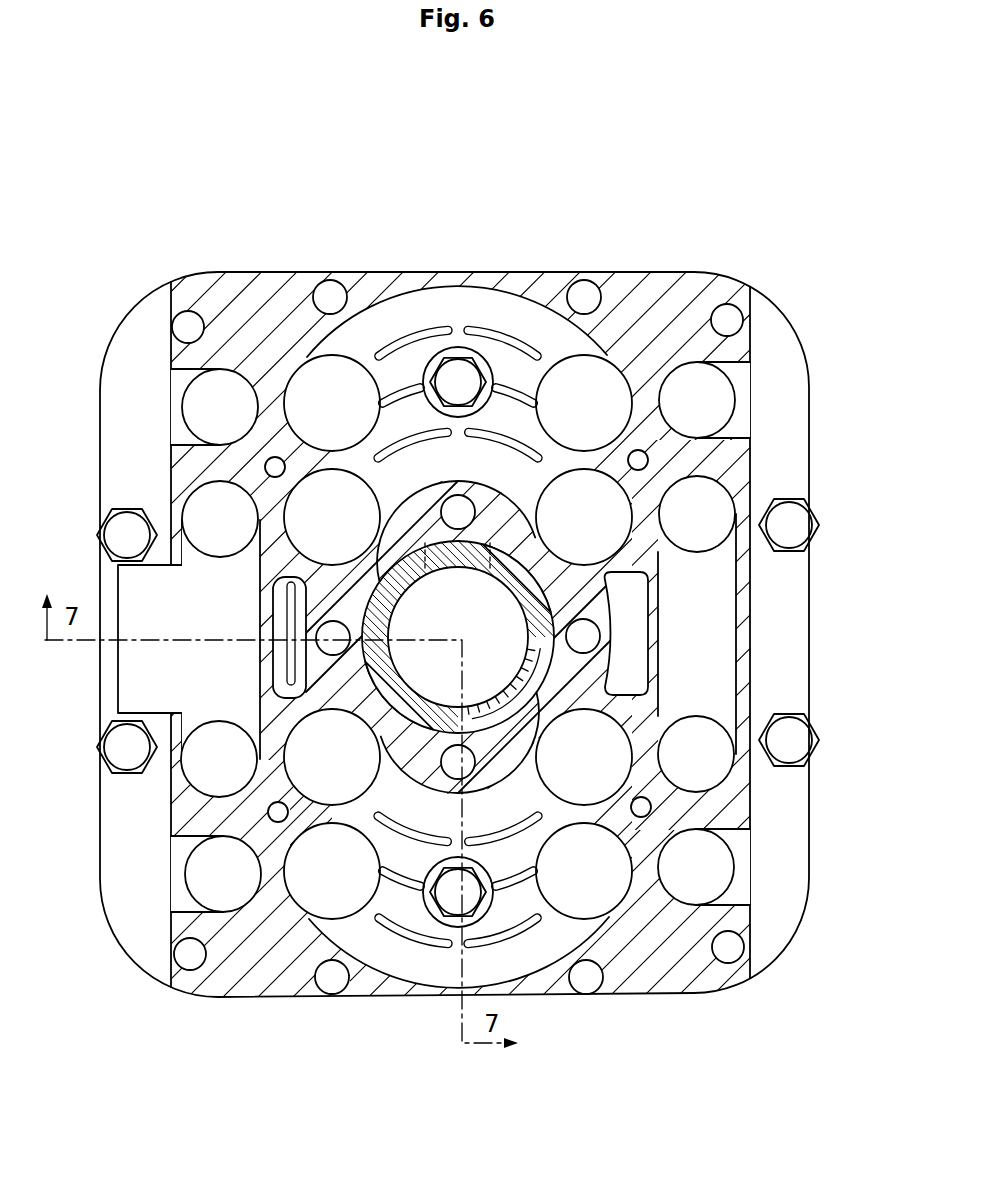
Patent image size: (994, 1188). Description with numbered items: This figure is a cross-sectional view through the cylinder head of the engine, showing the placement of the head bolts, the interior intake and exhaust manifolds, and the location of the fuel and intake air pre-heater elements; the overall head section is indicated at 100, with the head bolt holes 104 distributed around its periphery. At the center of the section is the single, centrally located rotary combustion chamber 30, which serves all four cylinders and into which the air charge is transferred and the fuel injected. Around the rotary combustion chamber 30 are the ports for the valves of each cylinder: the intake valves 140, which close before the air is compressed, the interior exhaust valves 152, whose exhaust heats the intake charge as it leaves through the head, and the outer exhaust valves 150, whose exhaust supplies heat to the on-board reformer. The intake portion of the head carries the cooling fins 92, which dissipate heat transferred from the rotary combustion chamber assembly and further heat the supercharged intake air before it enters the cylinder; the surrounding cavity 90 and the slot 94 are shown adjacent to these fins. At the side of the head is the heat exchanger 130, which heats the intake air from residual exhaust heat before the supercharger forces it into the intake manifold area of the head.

The pump housing assembly 100 is at (752, 250).
The mounting bolt hole 104 is at (336, 284).
The cooling fins 92 is at (404, 343).
The cavity 90 is at (444, 469).
The rotary combustion chamber 30 is at (445, 616).
The pin slot 94 is at (277, 612).
The heat exchanger 130 is at (168, 682).
The intake valves 140 is at (313, 414).
The outer exhaust valves 150 is at (201, 418).
The interior exhaust valves 152 is at (201, 530).